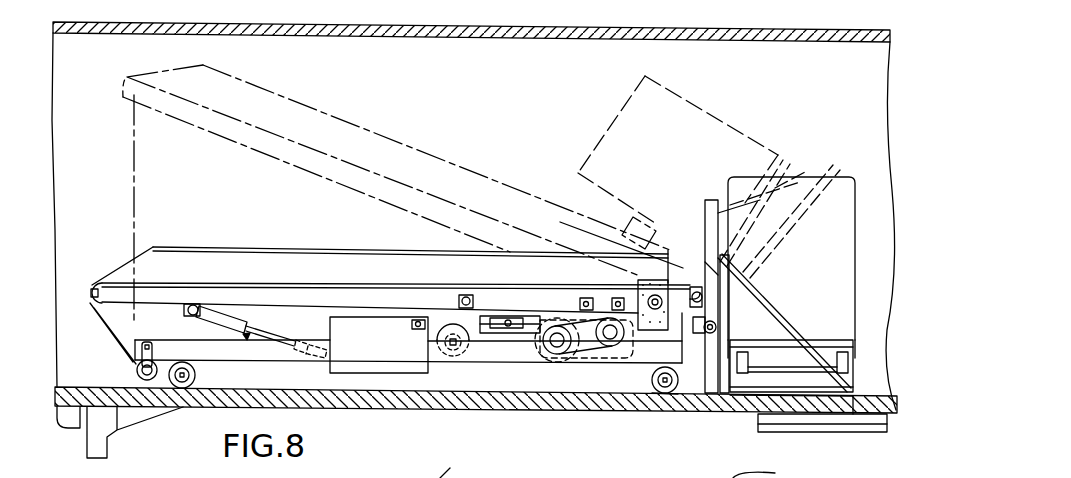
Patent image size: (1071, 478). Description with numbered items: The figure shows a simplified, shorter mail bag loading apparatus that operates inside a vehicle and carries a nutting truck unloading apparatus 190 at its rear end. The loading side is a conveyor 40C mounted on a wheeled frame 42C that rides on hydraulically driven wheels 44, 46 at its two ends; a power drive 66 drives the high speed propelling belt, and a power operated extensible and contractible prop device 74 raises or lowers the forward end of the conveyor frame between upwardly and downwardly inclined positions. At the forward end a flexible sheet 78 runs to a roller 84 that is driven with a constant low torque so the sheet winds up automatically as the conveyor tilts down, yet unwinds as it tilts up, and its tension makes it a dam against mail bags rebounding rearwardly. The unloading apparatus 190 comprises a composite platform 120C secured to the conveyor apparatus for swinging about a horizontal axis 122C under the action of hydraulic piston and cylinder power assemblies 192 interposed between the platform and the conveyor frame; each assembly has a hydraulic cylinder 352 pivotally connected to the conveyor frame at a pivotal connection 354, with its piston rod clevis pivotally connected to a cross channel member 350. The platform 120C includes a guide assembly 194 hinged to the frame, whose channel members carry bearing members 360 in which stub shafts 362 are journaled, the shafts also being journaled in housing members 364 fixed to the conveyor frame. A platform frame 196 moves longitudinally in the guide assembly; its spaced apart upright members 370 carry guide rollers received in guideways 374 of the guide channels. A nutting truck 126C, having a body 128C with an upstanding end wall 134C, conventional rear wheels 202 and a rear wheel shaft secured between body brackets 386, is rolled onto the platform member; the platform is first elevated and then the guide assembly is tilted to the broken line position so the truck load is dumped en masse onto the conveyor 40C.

The conveyor 40C is at (457, 151).
The wheeled frame 42C is at (523, 367).
The hydraulically driven wheel 44 is at (183, 390).
The hydraulically driven wheel 46 is at (660, 400).
The power drive 66 is at (490, 347).
The extensible and contractible prop device 74 is at (245, 340).
The flexible sheet 78 is at (113, 340).
The roller 84 is at (157, 383).
The composite platform 120C is at (742, 402).
The horizontal axis 122C is at (700, 295).
The nutting truck 126C is at (858, 158).
The nutting truck body 128C is at (818, 343).
The upstanding end wall 134C is at (818, 223).
The nutting truck unloading apparatus 190 is at (807, 140).
The hydraulic piston and cylinder power assembly 192 is at (653, 343).
The guide assembly 194 is at (713, 187).
The platform frame 196 is at (795, 310).
The rear wheels 202 is at (822, 426).
The cross channel member 350 is at (697, 310).
The hydraulic cylinder 352 is at (687, 337).
The pivotal connection 354 is at (632, 338).
The bearing member 360 is at (690, 297).
The stub shaft 362 is at (615, 244).
The housing member 364 is at (692, 304).
The upright member 370 is at (772, 469).
The guideway 374 is at (463, 467).
The body bracket 386 is at (855, 355).